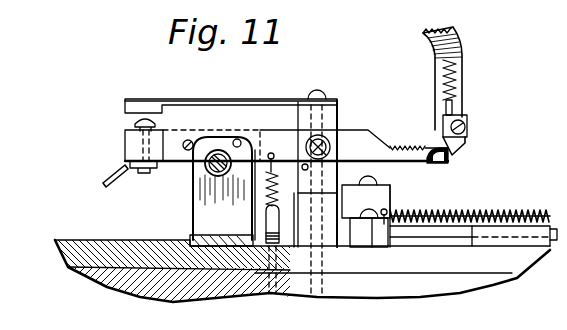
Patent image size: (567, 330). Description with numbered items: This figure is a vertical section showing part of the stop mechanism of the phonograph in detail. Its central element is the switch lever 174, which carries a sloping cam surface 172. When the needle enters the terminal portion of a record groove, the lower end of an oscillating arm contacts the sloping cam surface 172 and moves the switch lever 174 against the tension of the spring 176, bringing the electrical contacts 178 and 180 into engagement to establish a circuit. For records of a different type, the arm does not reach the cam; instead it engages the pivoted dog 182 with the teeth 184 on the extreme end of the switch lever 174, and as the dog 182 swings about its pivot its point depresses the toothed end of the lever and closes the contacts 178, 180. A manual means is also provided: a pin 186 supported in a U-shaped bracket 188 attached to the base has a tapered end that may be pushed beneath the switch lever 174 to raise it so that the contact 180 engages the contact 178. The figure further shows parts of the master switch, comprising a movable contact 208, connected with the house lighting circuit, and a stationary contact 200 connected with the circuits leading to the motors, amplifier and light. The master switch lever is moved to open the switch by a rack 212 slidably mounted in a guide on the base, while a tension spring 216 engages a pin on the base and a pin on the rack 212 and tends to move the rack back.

The sloping cam surface 172 is at (372, 138).
The switch lever 174 is at (268, 142).
The spring 176 is at (252, 204).
The electrical contact 178 is at (137, 108).
The electrical contact 180 is at (133, 146).
The pivoted dog 182 is at (467, 138).
The teeth 184 is at (450, 165).
The pin 186 is at (204, 172).
The U-shaped bracket 188 is at (211, 200).
The stationary contact 200 is at (328, 235).
The movable contact 208 is at (386, 196).
The rack 212 is at (423, 227).
The tension spring 216 is at (428, 226).